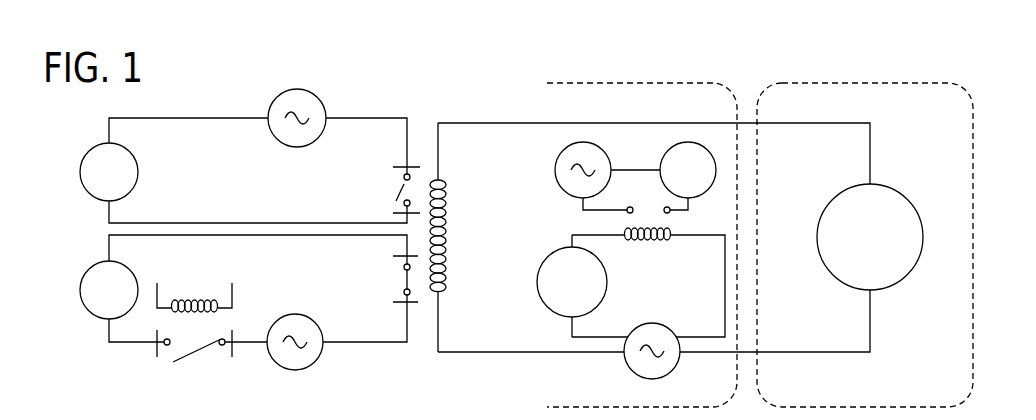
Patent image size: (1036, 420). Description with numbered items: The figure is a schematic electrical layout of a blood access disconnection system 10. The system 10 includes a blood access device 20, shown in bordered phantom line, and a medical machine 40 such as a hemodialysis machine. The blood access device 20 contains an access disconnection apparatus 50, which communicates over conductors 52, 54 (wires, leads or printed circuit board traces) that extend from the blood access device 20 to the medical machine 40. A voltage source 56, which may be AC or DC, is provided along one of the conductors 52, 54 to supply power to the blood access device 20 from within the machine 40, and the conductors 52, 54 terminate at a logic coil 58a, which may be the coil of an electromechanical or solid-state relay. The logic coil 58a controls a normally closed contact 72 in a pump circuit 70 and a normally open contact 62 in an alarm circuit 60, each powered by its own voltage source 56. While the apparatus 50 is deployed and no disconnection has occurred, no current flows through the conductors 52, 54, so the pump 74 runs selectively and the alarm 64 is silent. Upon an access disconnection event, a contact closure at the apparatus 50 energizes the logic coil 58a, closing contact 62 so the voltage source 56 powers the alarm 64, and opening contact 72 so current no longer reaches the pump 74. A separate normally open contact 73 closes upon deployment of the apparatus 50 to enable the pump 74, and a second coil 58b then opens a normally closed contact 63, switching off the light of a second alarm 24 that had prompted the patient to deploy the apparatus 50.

The system 10 is at (812, 46).
The blood access device 20 is at (958, 72).
The second alarm 24 is at (665, 154).
The medical machine 40 is at (668, 72).
The access disconnection apparatus 50 is at (538, 285).
The conductor 52 is at (508, 123).
The conductor 54 is at (498, 353).
The voltage source 56 is at (279, 95).
The logic coil 58a is at (447, 228).
The second coil 58b is at (207, 300).
The alarm circuit 60 is at (388, 104).
The normally open contact 62 is at (400, 185).
The normally closed contact 63 is at (648, 207).
The alarm 64 is at (139, 172).
The pump circuit 70 is at (389, 353).
The normally closed contact 72 is at (402, 277).
The normally open contact 73 is at (198, 355).
The pump 74 is at (137, 287).